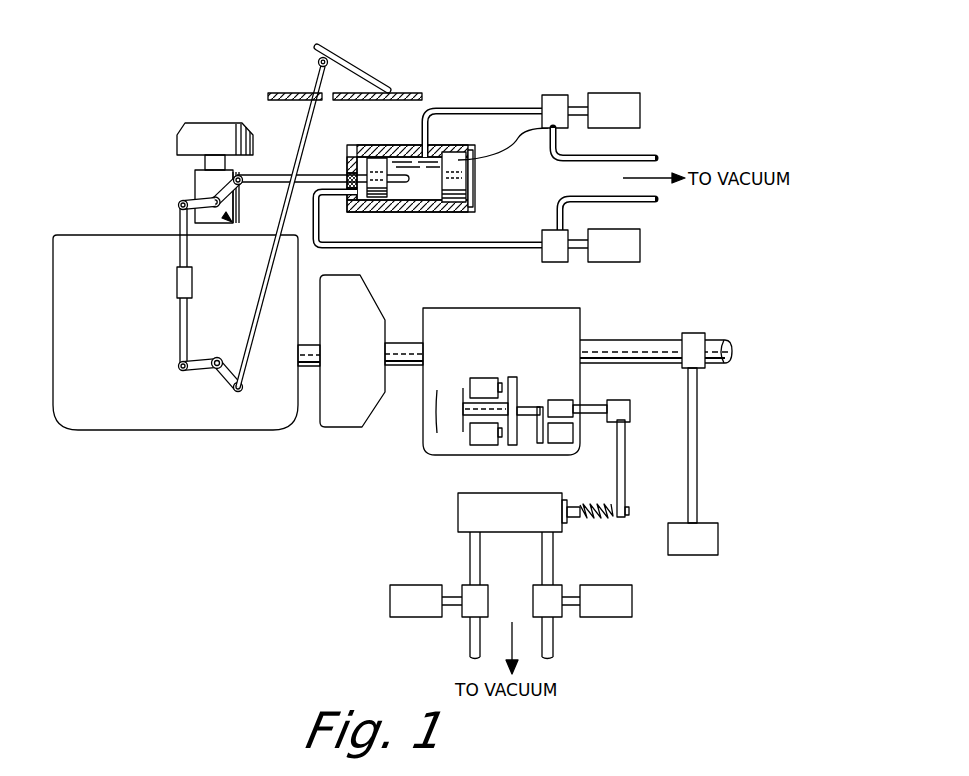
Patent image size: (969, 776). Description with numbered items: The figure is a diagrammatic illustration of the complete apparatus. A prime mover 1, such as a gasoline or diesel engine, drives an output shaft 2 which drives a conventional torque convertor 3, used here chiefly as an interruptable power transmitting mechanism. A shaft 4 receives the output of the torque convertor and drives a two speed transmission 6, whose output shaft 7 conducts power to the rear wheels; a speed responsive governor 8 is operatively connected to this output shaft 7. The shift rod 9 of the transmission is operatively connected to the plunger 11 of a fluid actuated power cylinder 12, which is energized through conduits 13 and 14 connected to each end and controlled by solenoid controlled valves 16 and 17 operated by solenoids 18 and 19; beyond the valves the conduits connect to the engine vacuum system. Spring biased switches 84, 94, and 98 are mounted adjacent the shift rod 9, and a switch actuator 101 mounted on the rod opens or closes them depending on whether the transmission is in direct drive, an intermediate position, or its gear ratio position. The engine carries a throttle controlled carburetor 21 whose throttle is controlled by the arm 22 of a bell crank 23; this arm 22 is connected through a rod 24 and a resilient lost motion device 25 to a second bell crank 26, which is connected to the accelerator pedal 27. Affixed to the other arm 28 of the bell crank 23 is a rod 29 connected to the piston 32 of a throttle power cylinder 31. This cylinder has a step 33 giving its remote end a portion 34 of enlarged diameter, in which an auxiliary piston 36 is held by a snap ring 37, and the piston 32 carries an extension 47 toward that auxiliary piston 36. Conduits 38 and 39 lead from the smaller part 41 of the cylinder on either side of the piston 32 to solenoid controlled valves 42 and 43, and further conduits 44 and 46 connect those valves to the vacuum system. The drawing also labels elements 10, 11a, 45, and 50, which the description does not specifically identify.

The prime mover 1 is at (130, 431).
The output shaft 2 is at (313, 368).
The torque convertor 3 is at (341, 427).
The shaft 4 is at (407, 366).
The transmission 6 is at (582, 318).
The output shaft 7 is at (630, 341).
The speed responsive governor 8 is at (718, 538).
The shift rod 9 is at (598, 407).
The link 10 is at (626, 467).
The plunger 11 is at (573, 507).
The spring 11a is at (605, 518).
The fluid actuated power cylinder 12 is at (470, 493).
The conduit 13 is at (470, 553).
The conduit 14 is at (553, 551).
The solenoid controlled valve 16 is at (490, 598).
The solenoid controlled valve 17 is at (565, 585).
The solenoid 18 is at (408, 617).
The solenoid 19 is at (625, 617).
The throttle controlled carburetor 21 is at (195, 178).
The arm 22 is at (183, 203).
The bell crank 23 is at (228, 218).
The rod 24 is at (178, 250).
The resilient lost motion device 25 is at (177, 285).
The bell crank 26 is at (212, 370).
The accelerator pedal 27 is at (352, 62).
The arm 28 is at (243, 186).
The rod 29 is at (270, 175).
The throttle power cylinder 31 is at (400, 146).
The piston 32 is at (381, 202).
The step 33 is at (447, 210).
The portion of enlarged diameter 34 is at (503, 137).
The auxiliary piston 36 is at (466, 176).
The snap ring 37 is at (473, 204).
The conduit 38 is at (323, 206).
The conduit 39 is at (515, 108).
The smaller part of cylinder 41 is at (352, 172).
The solenoid controlled valve 42 is at (548, 262).
The solenoid controlled valve 43 is at (565, 95).
The conduit 44 is at (651, 158).
The solenoid 45 is at (640, 258).
The conduit 46 is at (645, 203).
The extension 47 is at (400, 183).
The solenoid 50 is at (635, 93).
The spring biased switch 84 is at (483, 382).
The spring biased switch 94 is at (487, 441).
The spring biased switch 98 is at (563, 441).
The switch actuator 101 is at (522, 405).